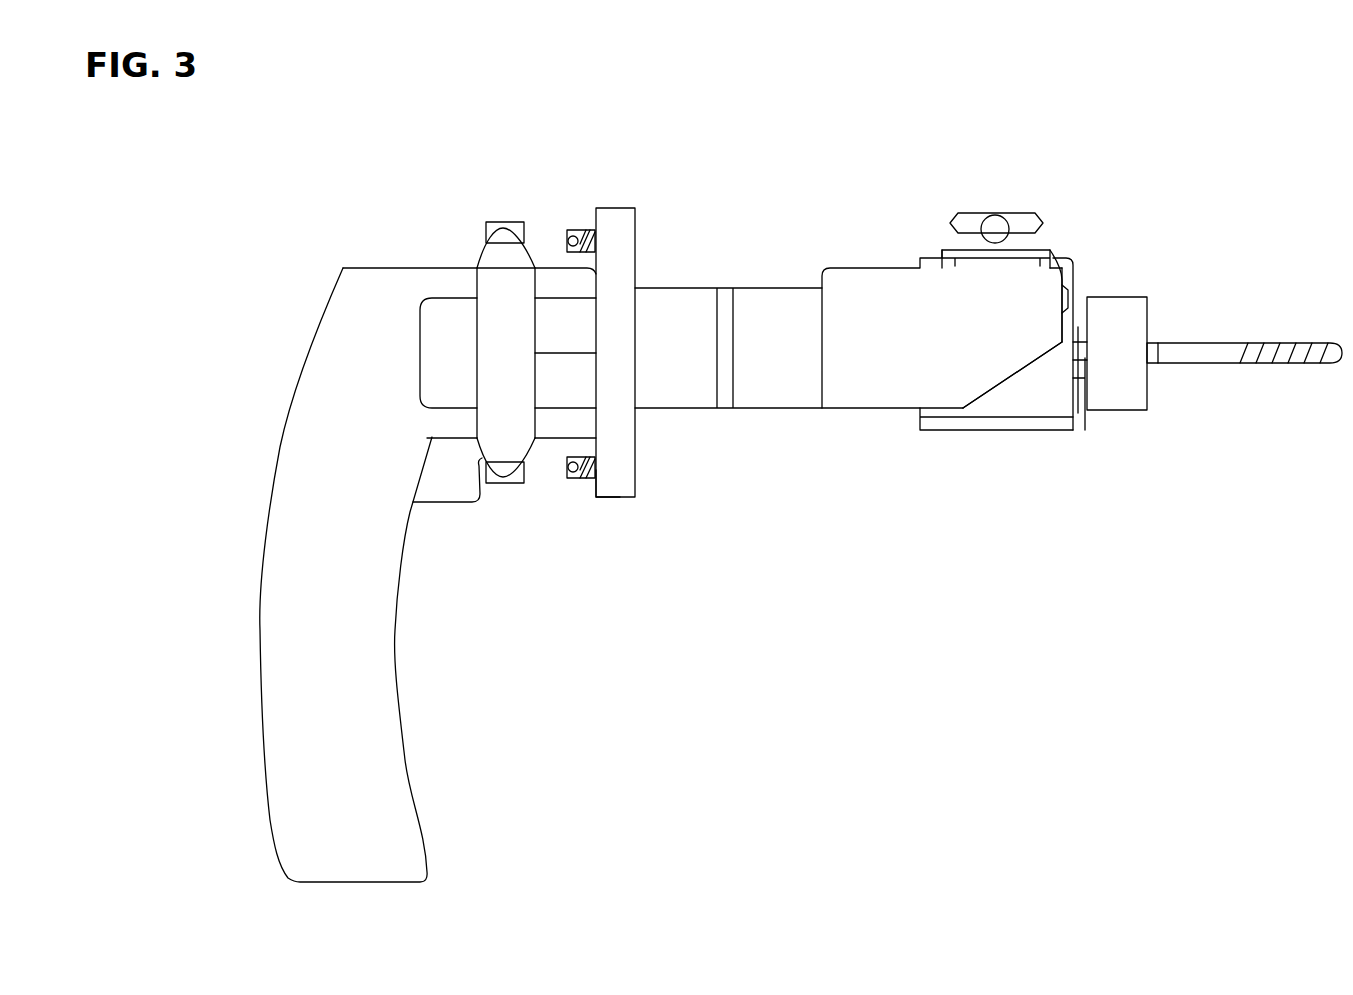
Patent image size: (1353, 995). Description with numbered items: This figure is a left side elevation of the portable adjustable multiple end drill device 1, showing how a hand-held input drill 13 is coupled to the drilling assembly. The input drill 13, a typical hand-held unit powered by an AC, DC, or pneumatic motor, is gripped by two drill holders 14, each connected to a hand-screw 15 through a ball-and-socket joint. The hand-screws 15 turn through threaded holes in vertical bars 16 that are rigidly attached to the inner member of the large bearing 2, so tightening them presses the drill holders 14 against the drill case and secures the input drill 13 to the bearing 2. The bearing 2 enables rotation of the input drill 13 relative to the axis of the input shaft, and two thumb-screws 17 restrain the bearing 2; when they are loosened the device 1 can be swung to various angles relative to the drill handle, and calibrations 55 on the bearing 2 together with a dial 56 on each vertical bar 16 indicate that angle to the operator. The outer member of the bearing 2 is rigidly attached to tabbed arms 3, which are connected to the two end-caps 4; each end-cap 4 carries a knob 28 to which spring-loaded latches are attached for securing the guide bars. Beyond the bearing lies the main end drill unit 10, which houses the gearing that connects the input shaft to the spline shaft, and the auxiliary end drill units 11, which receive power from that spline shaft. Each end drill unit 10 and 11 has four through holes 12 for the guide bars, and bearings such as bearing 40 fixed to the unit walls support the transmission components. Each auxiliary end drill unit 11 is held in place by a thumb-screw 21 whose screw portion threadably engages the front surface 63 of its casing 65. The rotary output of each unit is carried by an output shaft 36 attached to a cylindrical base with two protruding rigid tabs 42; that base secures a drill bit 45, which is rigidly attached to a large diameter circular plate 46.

The portable adjustable multiple end drill device 1 is at (744, 176).
The large bearing 2 is at (622, 490).
The tabbed arms 3 is at (672, 305).
The end-caps 4 is at (850, 288).
The main end drill unit 10 is at (1045, 427).
The auxiliary end drill units 11 is at (1070, 265).
The through holes 12 is at (1068, 290).
The input drill 13 is at (282, 632).
The drill holders 14 is at (488, 232).
The hand-screws 15 is at (497, 257).
The vertical bars 16 is at (435, 357).
The thumb-screws 17 is at (565, 234).
The thumb-screw 21 is at (1043, 225).
The knob 28 is at (980, 240).
The output shaft 36 is at (1085, 427).
The bearing 40 is at (1077, 430).
The protruding rigid tabs 42 is at (1155, 347).
The drill bit 45 is at (1213, 352).
The large diameter circular plate 46 is at (1148, 315).
The calibrations 55 is at (597, 495).
The dial 56 is at (572, 352).
The front surface 63 is at (1058, 258).
The casing 65 is at (1003, 405).